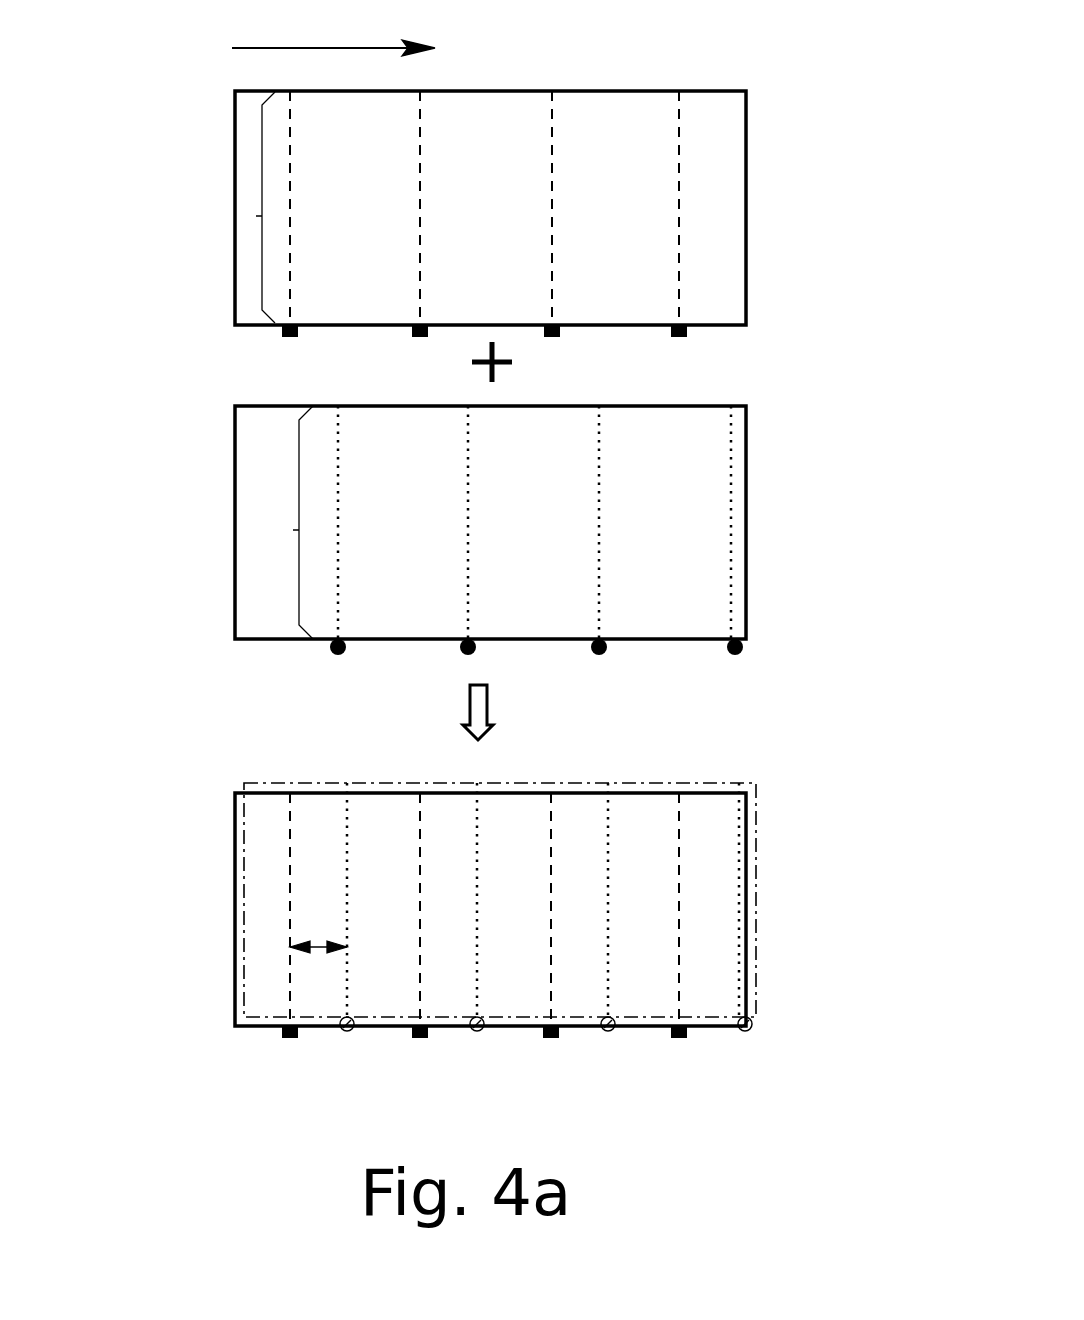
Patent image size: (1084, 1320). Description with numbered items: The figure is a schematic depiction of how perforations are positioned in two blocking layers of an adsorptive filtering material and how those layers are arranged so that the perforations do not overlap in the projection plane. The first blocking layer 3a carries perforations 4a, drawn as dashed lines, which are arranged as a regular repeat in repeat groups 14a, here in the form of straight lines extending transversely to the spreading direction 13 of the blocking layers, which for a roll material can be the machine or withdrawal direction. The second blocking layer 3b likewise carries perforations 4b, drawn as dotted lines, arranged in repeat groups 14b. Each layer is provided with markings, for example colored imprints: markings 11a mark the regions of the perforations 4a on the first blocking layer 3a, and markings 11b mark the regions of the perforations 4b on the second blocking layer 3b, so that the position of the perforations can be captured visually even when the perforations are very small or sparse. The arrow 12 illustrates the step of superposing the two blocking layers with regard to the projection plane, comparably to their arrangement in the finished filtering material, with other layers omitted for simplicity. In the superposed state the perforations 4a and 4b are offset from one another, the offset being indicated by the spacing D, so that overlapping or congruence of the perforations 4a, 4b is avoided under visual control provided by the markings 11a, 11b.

The first blocking layer 3a is at (716, 166).
The second blocking layer 3b is at (673, 530).
The perforations 4a is at (552, 148).
The perforations 4b is at (739, 863).
The markings 11a is at (690, 340).
The markings 11b is at (738, 655).
The arrow 12 is at (481, 700).
The spreading direction 13 is at (333, 34).
The repeat groups 14a is at (262, 216).
The repeat groups 14b is at (299, 530).
The offset distance D is at (316, 947).